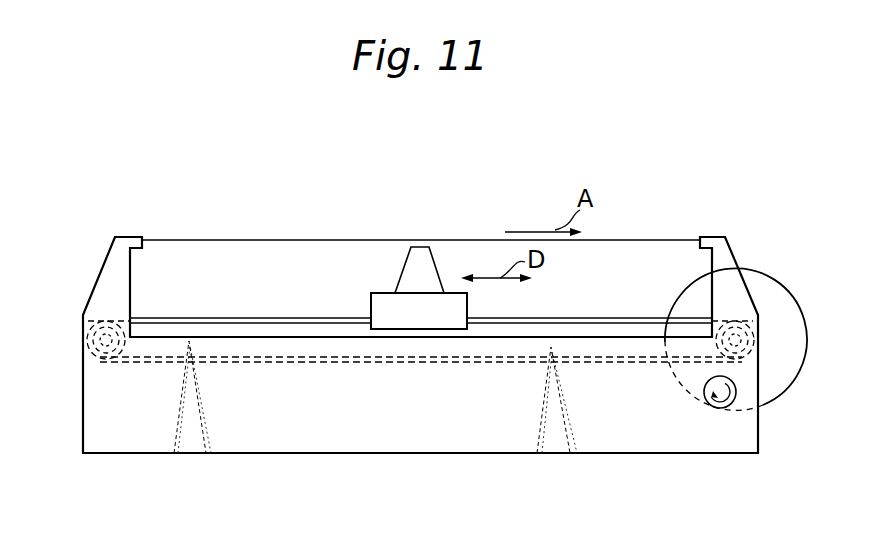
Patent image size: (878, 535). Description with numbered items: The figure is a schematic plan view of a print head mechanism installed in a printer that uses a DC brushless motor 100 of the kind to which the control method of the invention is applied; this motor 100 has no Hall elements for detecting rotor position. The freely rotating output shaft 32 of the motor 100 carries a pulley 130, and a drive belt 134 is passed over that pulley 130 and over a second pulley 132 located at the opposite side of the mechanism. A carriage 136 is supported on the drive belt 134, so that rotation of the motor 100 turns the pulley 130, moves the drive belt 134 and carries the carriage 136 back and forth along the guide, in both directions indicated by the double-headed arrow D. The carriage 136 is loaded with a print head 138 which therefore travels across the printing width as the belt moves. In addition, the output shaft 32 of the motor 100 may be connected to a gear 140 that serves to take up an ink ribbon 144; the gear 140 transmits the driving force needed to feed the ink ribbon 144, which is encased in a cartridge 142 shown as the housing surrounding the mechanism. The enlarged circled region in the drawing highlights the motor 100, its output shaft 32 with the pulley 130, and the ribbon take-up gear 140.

The output shaft 32 is at (758, 337).
The DC brushless motor 100 is at (767, 272).
The pulley 130 is at (750, 352).
The pulley 132 is at (98, 348).
The drive belt 134 is at (233, 318).
The carriage 136 is at (371, 305).
The print head 138 is at (438, 270).
The gear 140 is at (706, 406).
The cartridge 142 is at (277, 454).
The ink ribbon 144 is at (388, 240).